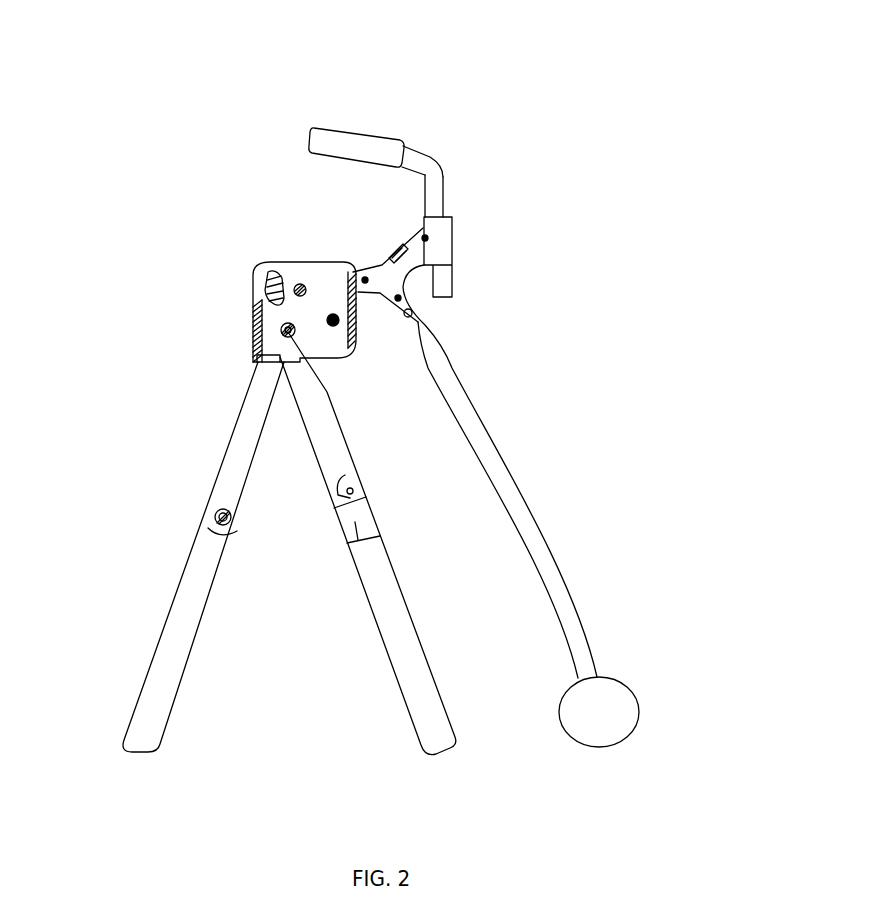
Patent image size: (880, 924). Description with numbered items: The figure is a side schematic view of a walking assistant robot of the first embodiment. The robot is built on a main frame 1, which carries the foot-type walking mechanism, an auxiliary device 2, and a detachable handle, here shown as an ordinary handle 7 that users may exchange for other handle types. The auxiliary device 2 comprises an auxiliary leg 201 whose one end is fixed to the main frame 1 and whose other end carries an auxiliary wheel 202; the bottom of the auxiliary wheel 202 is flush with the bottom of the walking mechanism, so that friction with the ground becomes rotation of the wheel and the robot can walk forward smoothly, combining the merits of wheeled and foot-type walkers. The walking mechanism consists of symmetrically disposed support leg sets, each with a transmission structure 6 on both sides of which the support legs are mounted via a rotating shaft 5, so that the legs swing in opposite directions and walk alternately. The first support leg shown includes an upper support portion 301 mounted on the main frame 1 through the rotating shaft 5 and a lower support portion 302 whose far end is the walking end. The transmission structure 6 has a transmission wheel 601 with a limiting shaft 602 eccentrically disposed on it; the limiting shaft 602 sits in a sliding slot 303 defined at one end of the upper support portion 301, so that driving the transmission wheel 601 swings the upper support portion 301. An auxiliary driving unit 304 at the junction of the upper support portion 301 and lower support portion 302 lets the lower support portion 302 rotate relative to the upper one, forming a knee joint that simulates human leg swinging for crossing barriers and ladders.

The main frame 1 is at (325, 283).
The auxiliary device 2 is at (597, 506).
The rotating shaft 5 is at (323, 358).
The transmission structure 6 is at (168, 258).
The ordinary handle 7 is at (422, 175).
The auxiliary leg 201 is at (472, 412).
The auxiliary wheel 202 is at (603, 712).
The upper support portion 301 is at (335, 455).
The lower support portion 302 is at (402, 643).
The sliding slot 303 is at (262, 308).
The auxiliary driving unit 304 is at (352, 540).
The transmission wheel 601 is at (305, 287).
The limiting shaft 602 is at (253, 288).